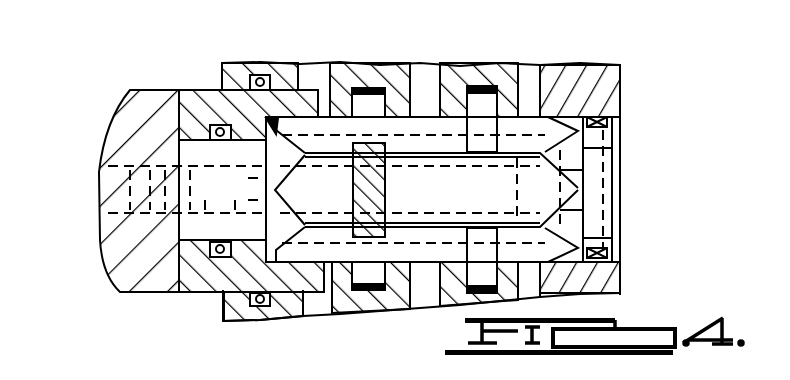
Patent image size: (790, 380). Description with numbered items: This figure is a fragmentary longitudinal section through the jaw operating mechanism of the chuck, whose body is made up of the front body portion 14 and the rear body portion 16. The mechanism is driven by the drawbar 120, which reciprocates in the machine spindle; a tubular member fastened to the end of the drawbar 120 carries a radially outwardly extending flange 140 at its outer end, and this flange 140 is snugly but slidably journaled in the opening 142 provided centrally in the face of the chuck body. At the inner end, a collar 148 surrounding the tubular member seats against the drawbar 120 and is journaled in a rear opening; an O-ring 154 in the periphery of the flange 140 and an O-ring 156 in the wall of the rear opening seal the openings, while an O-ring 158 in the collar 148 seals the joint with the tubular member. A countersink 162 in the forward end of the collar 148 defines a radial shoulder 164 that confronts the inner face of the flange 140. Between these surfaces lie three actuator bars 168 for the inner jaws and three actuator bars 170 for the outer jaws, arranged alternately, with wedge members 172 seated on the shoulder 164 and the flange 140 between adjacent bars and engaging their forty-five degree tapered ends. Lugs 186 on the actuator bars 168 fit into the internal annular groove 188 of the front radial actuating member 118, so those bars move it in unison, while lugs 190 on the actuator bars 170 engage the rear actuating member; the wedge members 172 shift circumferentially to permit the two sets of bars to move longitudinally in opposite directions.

The front body portion 14 is at (619, 67).
The rear body portion 16 is at (279, 71).
The front radial actuating member 118 is at (472, 48).
The drawbar 120 is at (100, 242).
The flange 140 is at (606, 138).
The opening 142 is at (607, 119).
The collar 148 is at (213, 283).
The O-ring 154 is at (617, 100).
The O-ring 156 is at (264, 296).
The O-ring 158 is at (210, 138).
The countersink 162 is at (222, 63).
The radial shoulder 164 is at (270, 130).
The actuator bars 168 is at (440, 148).
The actuator bars 170 is at (351, 66).
The wedge members 172 is at (580, 208).
The lugs 186 is at (540, 73).
The internal annular groove 188 is at (489, 95).
The lugs 190 is at (357, 169).